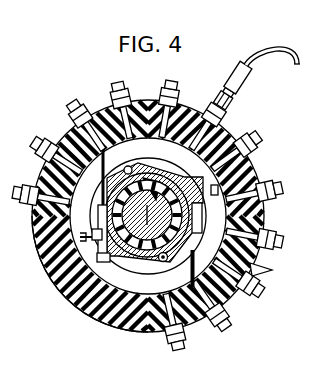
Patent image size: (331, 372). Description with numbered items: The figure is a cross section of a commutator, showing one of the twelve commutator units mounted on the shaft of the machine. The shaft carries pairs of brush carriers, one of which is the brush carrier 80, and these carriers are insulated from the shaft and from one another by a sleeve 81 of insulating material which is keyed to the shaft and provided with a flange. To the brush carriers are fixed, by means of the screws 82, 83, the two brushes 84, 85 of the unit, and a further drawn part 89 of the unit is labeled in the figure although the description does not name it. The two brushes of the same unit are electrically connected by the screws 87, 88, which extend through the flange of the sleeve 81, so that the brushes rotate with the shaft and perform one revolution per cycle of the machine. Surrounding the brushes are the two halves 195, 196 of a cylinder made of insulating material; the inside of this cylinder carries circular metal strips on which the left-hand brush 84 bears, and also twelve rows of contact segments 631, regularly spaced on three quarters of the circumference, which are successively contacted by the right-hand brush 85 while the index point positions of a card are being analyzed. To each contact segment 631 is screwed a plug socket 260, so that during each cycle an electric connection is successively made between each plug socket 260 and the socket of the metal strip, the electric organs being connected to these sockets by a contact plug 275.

The plug socket 260 is at (110, 83).
The contact plug 275 is at (250, 79).
The screw 82 is at (257, 176).
The screw 83 is at (43, 266).
The brush 85 is at (104, 164).
The screw 88 is at (152, 158).
The eccentric body 89 is at (168, 177).
The brush carrier 80 is at (195, 232).
The sleeve 81 is at (126, 259).
The screw 87 is at (160, 262).
The brush 84 is at (189, 264).
The contact segment 631 is at (274, 272).
The cylinder half 196 is at (98, 318).
The cylinder half 195 is at (194, 325).